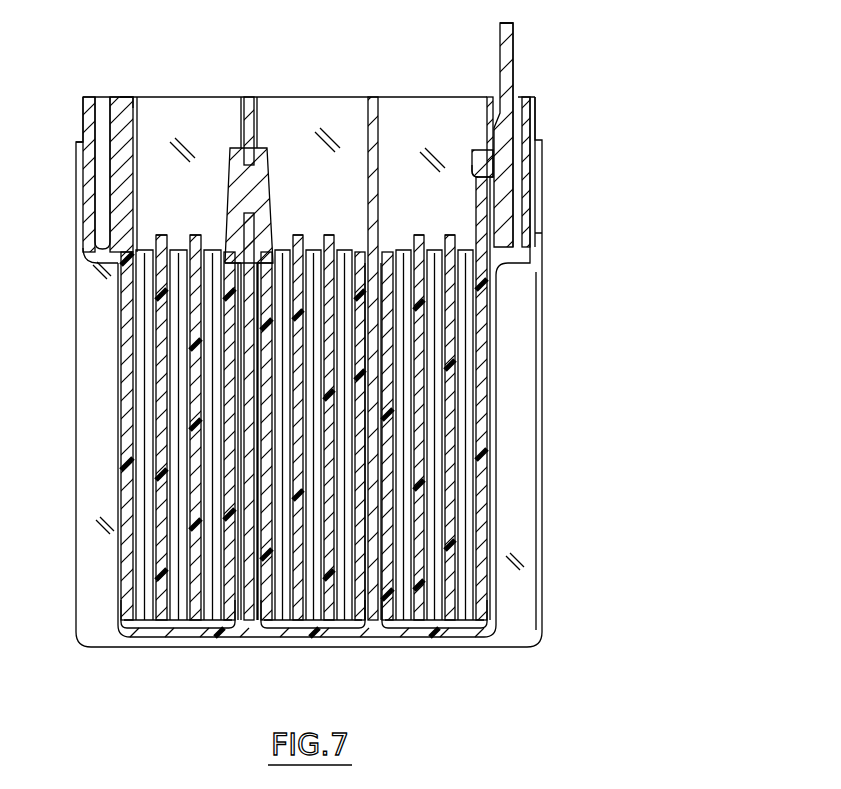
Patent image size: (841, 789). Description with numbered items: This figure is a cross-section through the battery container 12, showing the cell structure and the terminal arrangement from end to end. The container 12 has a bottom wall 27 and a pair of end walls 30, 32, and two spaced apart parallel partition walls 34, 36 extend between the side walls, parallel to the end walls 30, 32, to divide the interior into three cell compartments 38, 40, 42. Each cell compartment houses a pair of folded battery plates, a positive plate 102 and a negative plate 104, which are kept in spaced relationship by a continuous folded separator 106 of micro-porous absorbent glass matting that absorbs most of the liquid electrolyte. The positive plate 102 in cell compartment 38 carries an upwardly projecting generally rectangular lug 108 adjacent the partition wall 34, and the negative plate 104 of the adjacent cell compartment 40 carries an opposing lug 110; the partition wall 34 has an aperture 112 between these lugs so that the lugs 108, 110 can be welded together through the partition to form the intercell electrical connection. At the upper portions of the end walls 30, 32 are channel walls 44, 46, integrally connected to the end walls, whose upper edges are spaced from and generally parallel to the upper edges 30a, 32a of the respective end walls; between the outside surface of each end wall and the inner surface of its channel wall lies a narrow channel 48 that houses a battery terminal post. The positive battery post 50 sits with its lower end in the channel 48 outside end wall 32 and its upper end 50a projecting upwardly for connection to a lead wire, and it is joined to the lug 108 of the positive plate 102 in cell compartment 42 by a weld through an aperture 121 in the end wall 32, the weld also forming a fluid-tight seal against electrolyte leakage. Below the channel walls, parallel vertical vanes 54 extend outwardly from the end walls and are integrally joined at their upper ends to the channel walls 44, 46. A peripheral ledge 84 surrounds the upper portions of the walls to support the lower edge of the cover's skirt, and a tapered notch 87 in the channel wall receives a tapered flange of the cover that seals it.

The battery container 12 is at (545, 357).
The bottom wall 27 is at (308, 647).
The end wall 30 is at (136, 108).
The upper edge of end wall 30a is at (130, 97).
The end wall 32 is at (487, 100).
The upper edge of end wall 32a is at (490, 97).
The partition wall 34 is at (250, 97).
The partition wall 36 is at (376, 97).
The cell compartment 38 is at (177, 124).
The cell compartment 40 is at (300, 124).
The cell compartment 42 is at (408, 134).
The channel wall 44 is at (83, 243).
The channel wall 46 is at (533, 247).
The channel 48 is at (103, 196).
The positive battery post 50 is at (515, 53).
The upper end of battery post 50a is at (515, 26).
The vertical vanes 54 is at (76, 386).
The peripheral ledge 84 is at (76, 142).
The tapered notch 87 is at (537, 208).
The positive plate 102 is at (473, 213).
The negative plate 104 is at (150, 440).
The folded separator 106 is at (190, 235).
The lug 108 is at (230, 155).
The lug 110 is at (273, 157).
The aperture 112 is at (228, 175).
The aperture 121 is at (472, 175).